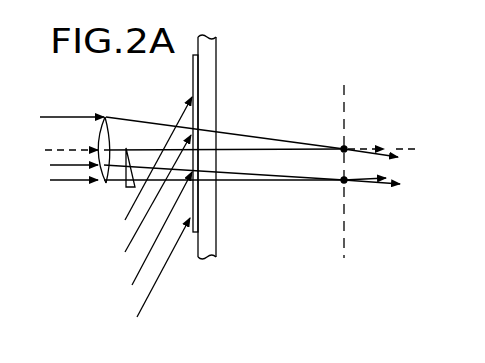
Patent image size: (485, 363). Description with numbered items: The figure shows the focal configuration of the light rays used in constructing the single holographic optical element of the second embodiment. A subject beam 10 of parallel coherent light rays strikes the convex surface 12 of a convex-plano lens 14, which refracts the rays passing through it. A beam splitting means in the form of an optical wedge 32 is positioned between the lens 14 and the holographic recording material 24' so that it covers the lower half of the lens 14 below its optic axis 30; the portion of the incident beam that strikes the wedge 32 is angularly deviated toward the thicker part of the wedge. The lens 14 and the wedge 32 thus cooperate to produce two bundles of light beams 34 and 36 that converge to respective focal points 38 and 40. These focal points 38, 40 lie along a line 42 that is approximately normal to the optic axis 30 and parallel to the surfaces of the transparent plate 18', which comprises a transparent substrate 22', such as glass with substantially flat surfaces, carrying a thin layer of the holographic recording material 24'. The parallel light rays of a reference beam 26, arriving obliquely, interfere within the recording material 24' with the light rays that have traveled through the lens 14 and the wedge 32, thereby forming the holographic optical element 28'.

The subject beam 10 is at (63, 117).
The convex surface 12 is at (102, 115).
The convex-plano lens 14 is at (110, 115).
The transparent plate 18' is at (237, 147).
The transparent substrate 22' is at (240, 147).
The holographic recording material 24' is at (180, 143).
The reference beam 26 is at (131, 208).
The holographic optical element 28' is at (154, 82).
The optic axis 30 is at (44, 144).
The optical wedge 32 is at (133, 186).
The bundle of light beams 34 is at (307, 148).
The bundle of light beams 36 is at (273, 177).
The focal point 38 is at (347, 147).
The focal point 40 is at (347, 183).
The line 42 is at (345, 93).